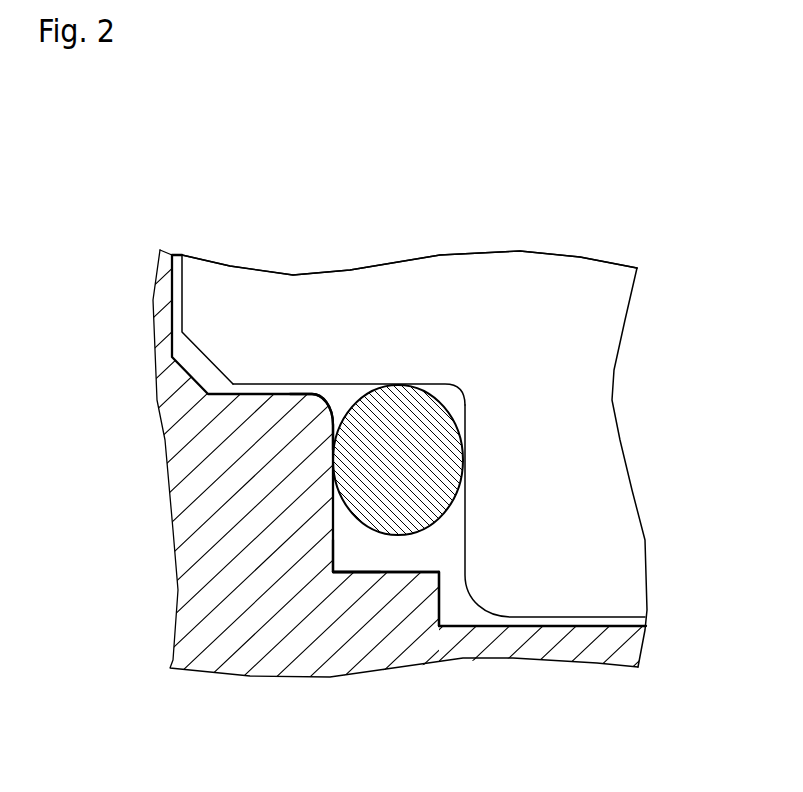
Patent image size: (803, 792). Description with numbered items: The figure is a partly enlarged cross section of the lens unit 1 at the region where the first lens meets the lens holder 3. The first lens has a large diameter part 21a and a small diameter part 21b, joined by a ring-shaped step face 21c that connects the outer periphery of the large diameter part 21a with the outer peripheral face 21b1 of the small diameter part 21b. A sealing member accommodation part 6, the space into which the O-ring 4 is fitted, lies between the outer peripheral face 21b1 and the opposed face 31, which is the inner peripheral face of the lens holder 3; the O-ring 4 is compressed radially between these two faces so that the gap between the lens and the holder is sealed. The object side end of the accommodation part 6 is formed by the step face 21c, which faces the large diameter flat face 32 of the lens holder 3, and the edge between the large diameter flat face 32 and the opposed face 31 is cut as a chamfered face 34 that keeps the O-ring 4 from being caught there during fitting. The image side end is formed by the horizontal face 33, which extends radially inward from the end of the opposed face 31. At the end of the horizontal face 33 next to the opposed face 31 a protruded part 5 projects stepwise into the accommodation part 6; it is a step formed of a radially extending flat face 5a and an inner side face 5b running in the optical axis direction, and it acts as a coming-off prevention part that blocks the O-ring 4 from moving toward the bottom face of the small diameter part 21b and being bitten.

The lens unit 1 is at (118, 125).
The lens holder 3 is at (187, 467).
The O-ring 4 is at (372, 487).
The protruded part 5 is at (423, 605).
The flat face 5a is at (403, 565).
The inner side face 5b is at (440, 596).
The sealing member accommodation part 6 is at (372, 542).
The large diameter part 21a is at (358, 320).
The small diameter part 21b is at (500, 512).
The outer peripheral face 21b1 is at (462, 520).
The step face 21c is at (320, 383).
The opposed face 31 is at (333, 528).
The large diameter flat face 32 is at (270, 393).
The horizontal face 33 is at (525, 627).
The chamfered face 34 is at (320, 405).